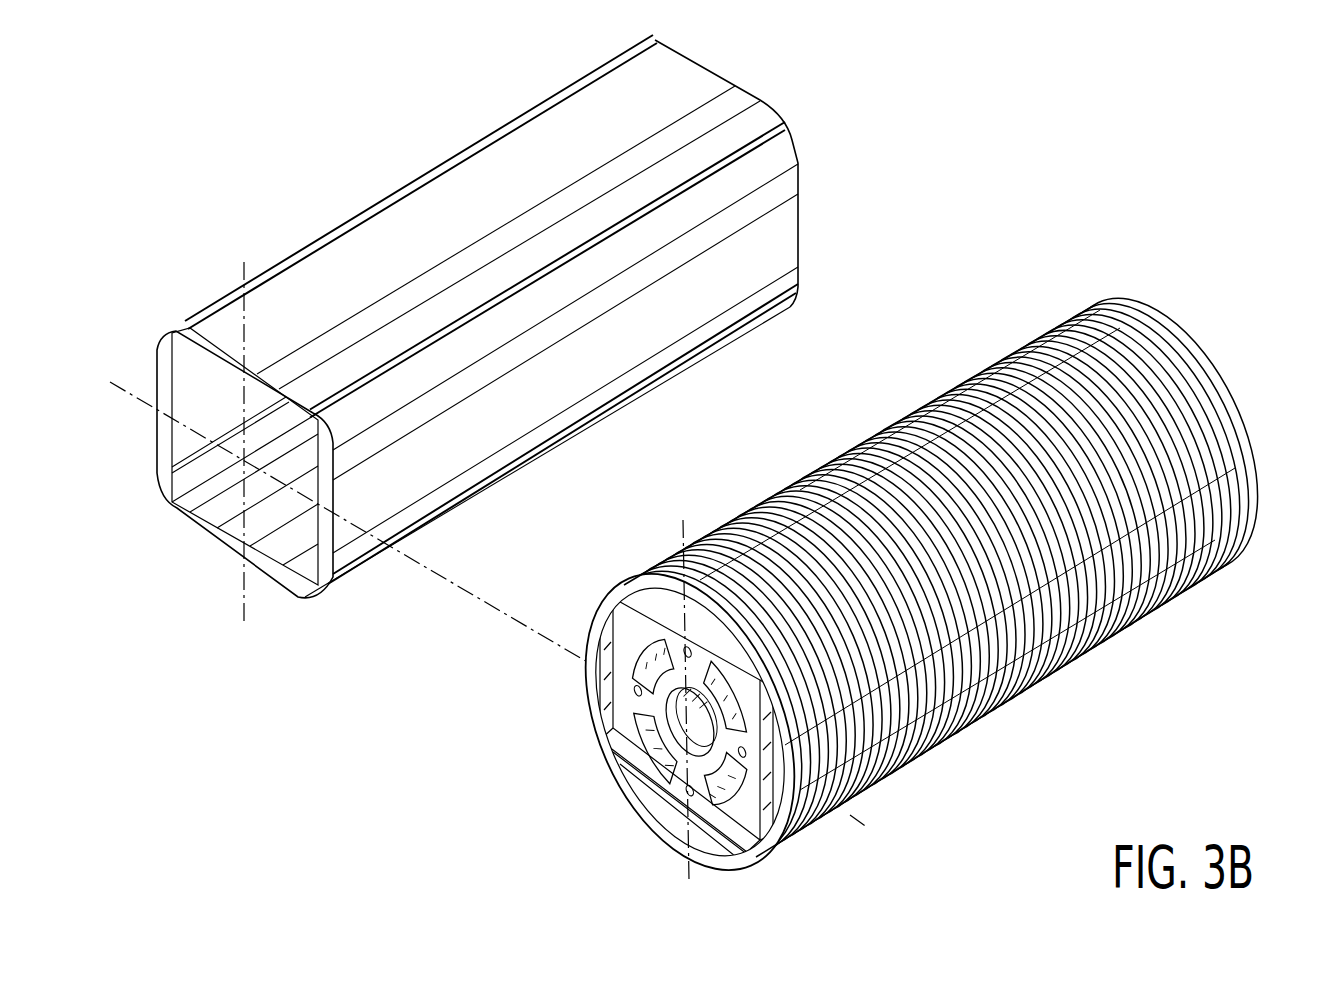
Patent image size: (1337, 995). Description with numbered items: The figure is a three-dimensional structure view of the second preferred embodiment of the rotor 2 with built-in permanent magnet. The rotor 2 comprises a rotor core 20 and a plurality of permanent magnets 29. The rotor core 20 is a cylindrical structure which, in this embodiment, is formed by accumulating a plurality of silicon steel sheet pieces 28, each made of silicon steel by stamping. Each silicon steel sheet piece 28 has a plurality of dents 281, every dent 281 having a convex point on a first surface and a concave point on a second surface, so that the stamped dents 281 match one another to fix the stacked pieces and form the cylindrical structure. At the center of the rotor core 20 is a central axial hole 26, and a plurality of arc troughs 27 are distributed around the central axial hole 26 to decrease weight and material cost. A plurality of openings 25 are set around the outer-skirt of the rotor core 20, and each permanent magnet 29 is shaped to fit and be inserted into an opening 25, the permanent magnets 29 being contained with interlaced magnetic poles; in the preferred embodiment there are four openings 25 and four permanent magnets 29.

The rotor with built-in permanent magnet 2 is at (1092, 124).
The rotor core 20 is at (1230, 333).
The opening 25 is at (670, 822).
The central axial hole 26 is at (662, 697).
The arc trough 27 is at (650, 740).
The silicon steel sheet piece 28 is at (705, 603).
The dent 281 is at (744, 757).
The permanent magnet 29 is at (319, 283).